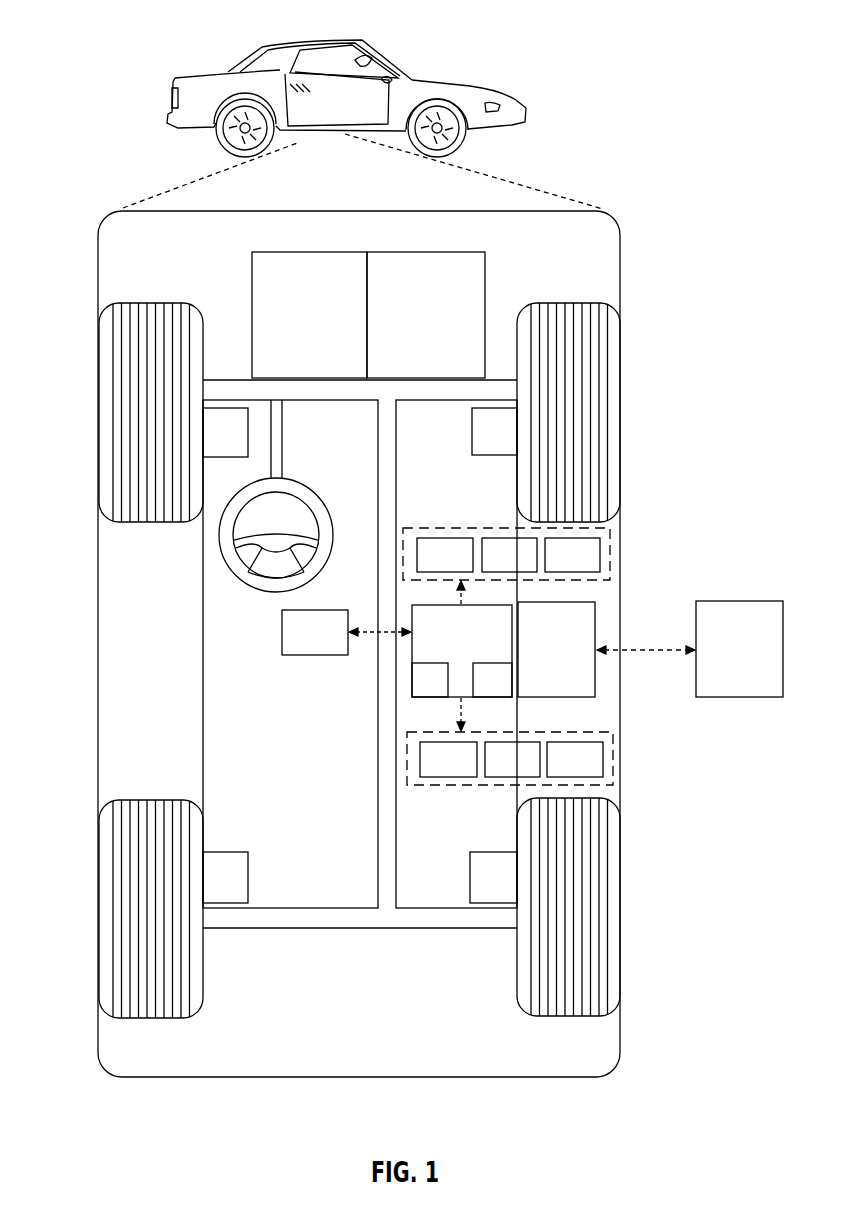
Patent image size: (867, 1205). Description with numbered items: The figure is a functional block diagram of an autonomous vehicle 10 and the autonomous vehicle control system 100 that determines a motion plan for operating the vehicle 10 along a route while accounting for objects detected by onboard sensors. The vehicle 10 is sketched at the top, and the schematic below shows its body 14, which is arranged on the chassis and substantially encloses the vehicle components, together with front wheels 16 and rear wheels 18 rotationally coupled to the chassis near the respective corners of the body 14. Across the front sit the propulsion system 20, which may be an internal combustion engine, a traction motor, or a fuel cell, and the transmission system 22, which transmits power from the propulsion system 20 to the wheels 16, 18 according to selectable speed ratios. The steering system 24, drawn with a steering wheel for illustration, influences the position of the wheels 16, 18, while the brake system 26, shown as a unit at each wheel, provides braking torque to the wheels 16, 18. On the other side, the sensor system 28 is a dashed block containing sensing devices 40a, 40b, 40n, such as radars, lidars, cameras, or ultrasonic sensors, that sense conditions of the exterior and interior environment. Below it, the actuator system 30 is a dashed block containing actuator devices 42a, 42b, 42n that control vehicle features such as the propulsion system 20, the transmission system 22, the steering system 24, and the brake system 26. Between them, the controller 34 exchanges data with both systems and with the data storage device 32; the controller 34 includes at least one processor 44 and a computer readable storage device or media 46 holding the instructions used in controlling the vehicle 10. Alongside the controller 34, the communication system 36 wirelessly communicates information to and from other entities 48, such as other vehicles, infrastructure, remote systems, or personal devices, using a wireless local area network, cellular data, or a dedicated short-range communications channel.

The autonomous vehicle 10 is at (171, 97).
The autonomous vehicle control system 100 is at (652, 206).
The body 14 is at (99, 645).
The front wheels 16 is at (137, 429).
The rear wheels 18 is at (137, 923).
The propulsion system 20 is at (297, 328).
The transmission system 22 is at (412, 328).
The steering system 24 is at (304, 420).
The brake system 26 is at (212, 441).
The sensor system 28 is at (506, 525).
The actuator system 30 is at (510, 787).
The data storage device 32 is at (302, 643).
The controller 34 is at (449, 643).
The communication system 36 is at (544, 661).
The sensing device 40a is at (427, 566).
The sensing device 40b is at (492, 566).
The sensing device 40n is at (555, 566).
The actuator device 42a is at (430, 771).
The actuator device 42b is at (494, 771).
The actuator device 42n is at (557, 771).
The processor 44 is at (417, 691).
The computer readable storage device or media 46 is at (480, 691).
The other entities 48 is at (727, 661).